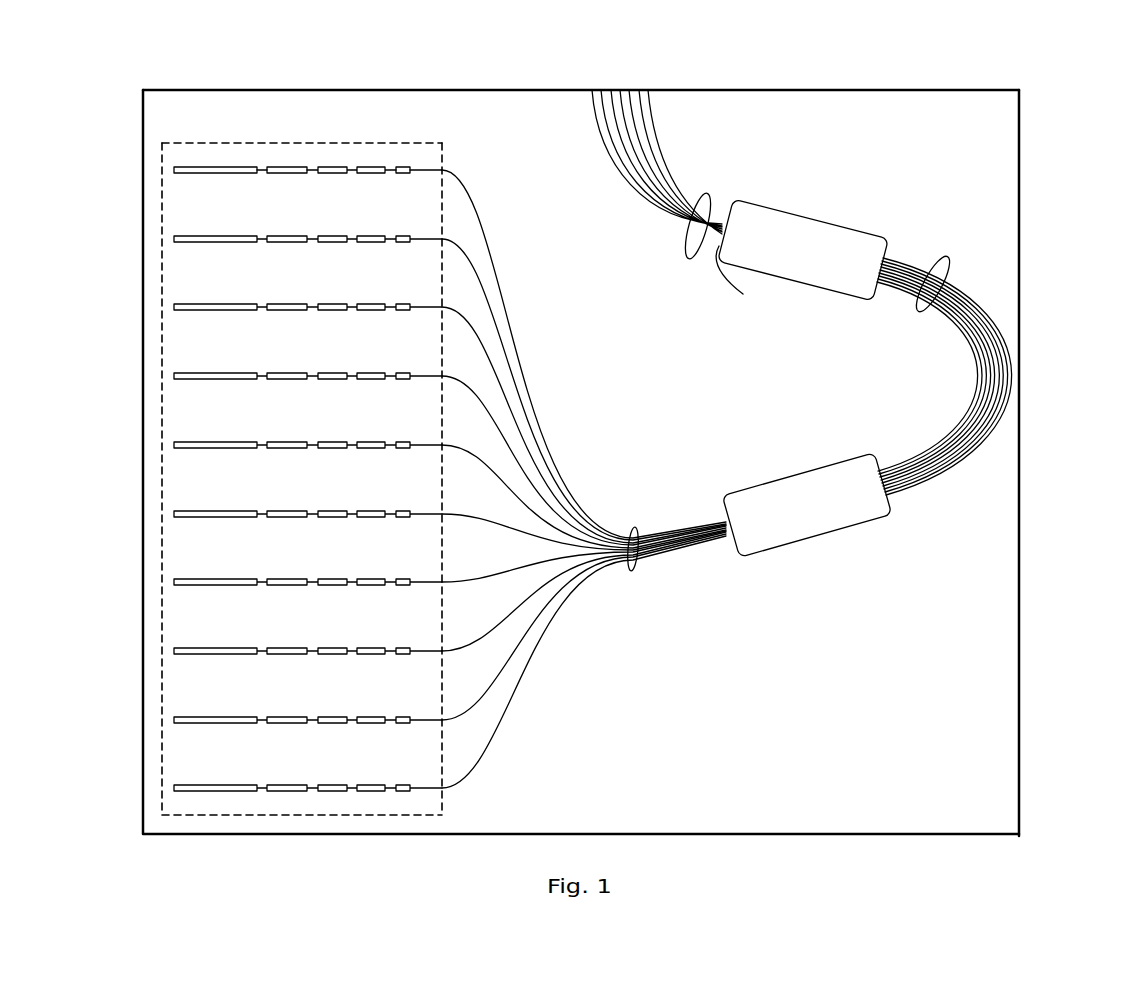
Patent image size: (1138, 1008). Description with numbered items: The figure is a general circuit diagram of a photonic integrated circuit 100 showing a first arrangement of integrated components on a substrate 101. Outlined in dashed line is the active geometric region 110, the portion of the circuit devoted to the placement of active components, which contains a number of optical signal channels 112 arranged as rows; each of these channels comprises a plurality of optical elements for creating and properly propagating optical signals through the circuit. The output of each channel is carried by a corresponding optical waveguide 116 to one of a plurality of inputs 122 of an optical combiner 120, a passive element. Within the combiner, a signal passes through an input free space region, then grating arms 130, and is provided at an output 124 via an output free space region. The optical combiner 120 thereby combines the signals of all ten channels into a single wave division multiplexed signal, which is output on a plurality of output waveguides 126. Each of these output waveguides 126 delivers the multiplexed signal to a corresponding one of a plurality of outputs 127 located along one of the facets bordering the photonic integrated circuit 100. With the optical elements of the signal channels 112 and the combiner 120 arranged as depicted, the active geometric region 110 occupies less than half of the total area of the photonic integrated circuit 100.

The photonic integrated circuit 100 is at (898, 76).
The substrate 101 is at (965, 144).
The active geometric region 110 is at (160, 145).
The optical signal channels 112 is at (410, 162).
The optical waveguides 116 is at (641, 566).
The optical combiner 120 is at (922, 230).
The inputs 122 is at (702, 512).
The output 124 is at (753, 279).
The output waveguides 126 is at (710, 200).
The outputs 127 is at (655, 83).
The grating arms 130 is at (947, 262).